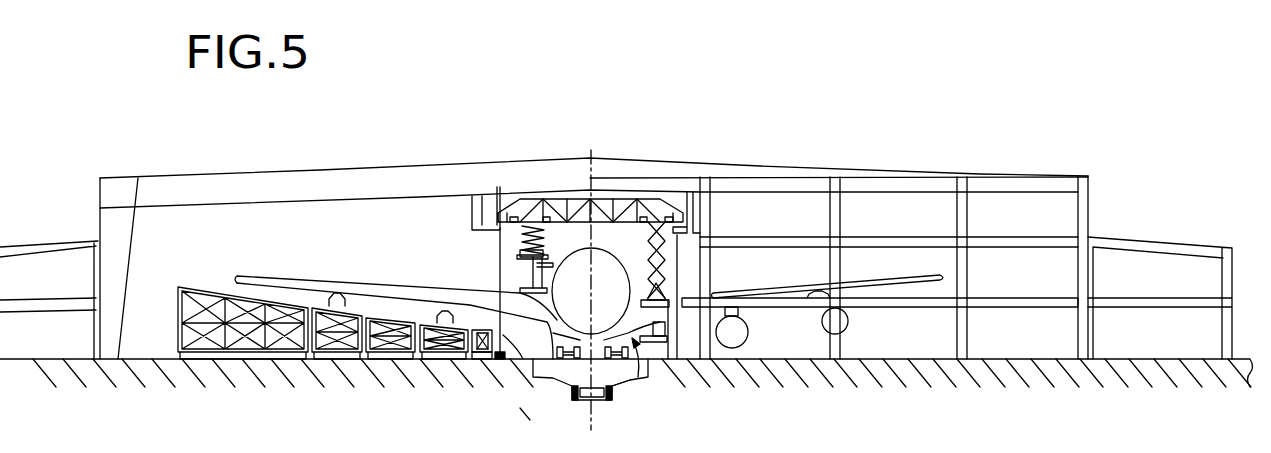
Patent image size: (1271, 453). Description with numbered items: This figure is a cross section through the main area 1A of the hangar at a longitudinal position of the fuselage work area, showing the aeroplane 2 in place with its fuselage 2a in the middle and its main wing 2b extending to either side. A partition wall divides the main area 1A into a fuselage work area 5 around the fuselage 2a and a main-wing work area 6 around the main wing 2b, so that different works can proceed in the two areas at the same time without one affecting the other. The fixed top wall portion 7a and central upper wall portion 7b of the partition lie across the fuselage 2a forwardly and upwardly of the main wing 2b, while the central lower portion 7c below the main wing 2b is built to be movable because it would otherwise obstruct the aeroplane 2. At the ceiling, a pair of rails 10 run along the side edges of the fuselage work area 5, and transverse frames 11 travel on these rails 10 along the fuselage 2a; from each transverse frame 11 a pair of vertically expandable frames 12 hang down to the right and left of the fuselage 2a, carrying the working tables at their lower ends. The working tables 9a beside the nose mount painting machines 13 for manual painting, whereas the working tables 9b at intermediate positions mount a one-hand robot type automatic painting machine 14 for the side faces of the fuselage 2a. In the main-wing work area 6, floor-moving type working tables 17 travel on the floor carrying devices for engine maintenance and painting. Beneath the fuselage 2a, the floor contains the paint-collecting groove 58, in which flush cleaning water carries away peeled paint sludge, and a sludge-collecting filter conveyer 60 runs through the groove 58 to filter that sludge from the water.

The main area 1A is at (1034, 175).
The aeroplane 2 is at (650, 363).
The fuselage 2a is at (532, 362).
The main wing 2b is at (350, 287).
The fuselage work area 5 is at (513, 247).
The main-wing work area 6 is at (269, 239).
The top wall portion 7a is at (668, 325).
The central upper wall portion 7b is at (500, 275).
The central lower portion 7c is at (495, 360).
The working tables 9a is at (672, 352).
The working tables 9b is at (500, 257).
The rails 10 is at (502, 213).
The transverse frames 11 is at (560, 198).
The vertically expandable frames 12 is at (502, 216).
The painting machines 13 is at (670, 325).
The automatic painting machine 14 is at (536, 296).
The floor-moving type working tables 17 is at (327, 360).
The paint-collecting groove 58 is at (600, 402).
The sludge-collecting filter conveyer 60 is at (627, 380).